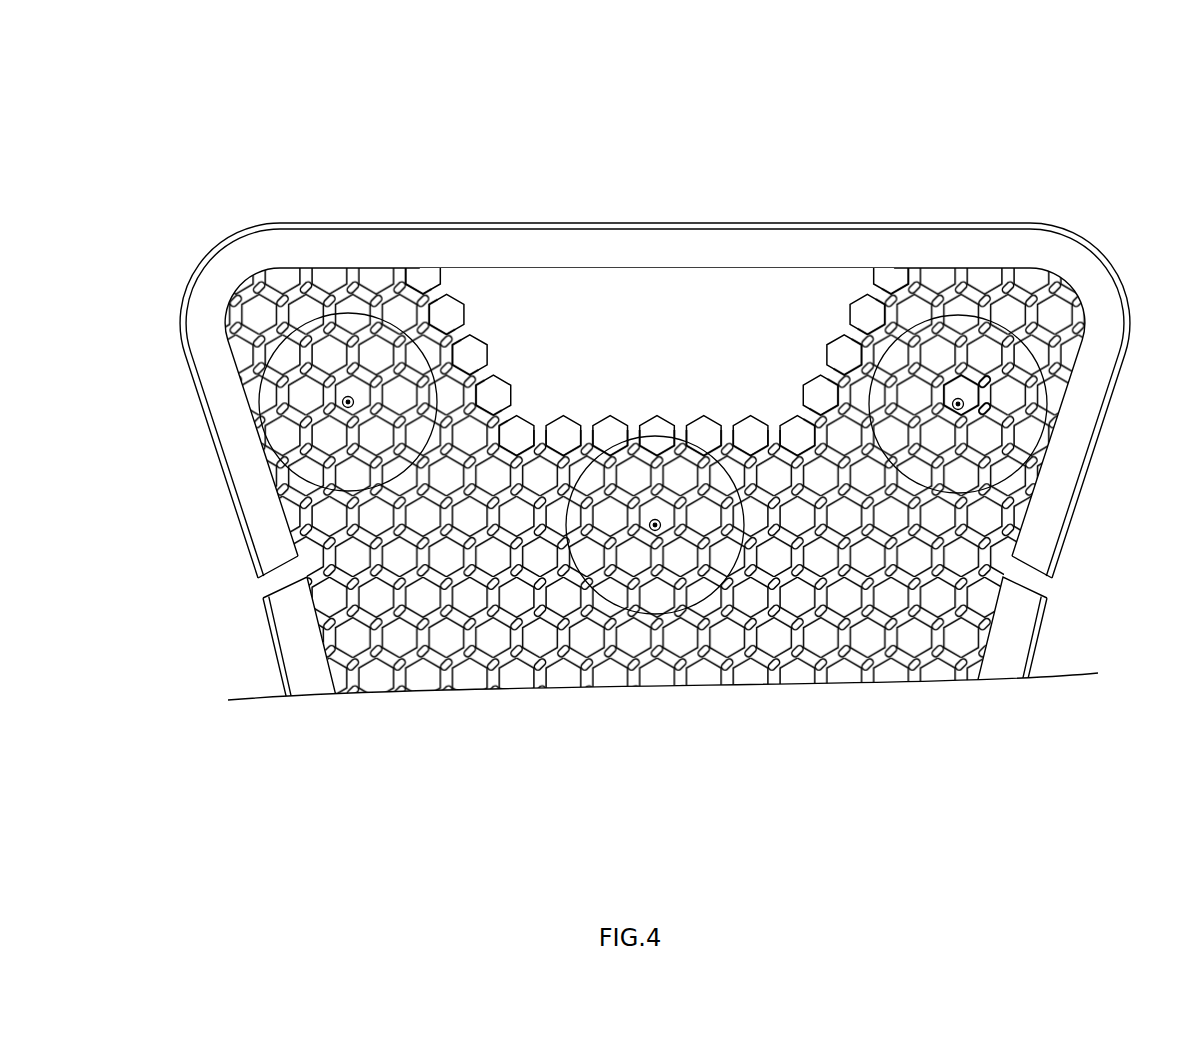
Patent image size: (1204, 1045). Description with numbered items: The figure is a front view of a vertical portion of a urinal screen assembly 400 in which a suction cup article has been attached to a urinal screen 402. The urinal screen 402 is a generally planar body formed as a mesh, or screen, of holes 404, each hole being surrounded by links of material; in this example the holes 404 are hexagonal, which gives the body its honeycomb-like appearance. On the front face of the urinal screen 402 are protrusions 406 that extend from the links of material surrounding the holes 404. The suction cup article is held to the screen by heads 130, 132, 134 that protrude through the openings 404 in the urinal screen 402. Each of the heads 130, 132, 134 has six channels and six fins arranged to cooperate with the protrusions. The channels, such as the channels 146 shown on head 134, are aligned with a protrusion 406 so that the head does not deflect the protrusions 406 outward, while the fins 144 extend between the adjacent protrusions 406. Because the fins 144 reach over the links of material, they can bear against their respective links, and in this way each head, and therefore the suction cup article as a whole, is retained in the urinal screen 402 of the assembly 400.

The urinal screen assembly 400 is at (188, 50).
The head 130 is at (347, 396).
The head 132 is at (653, 518).
The head 134 is at (975, 395).
The fins 144 is at (972, 392).
The channels 146 is at (986, 397).
The protrusions 406 is at (993, 418).
The urinal screen 402 is at (264, 632).
The holes 404 is at (375, 683).